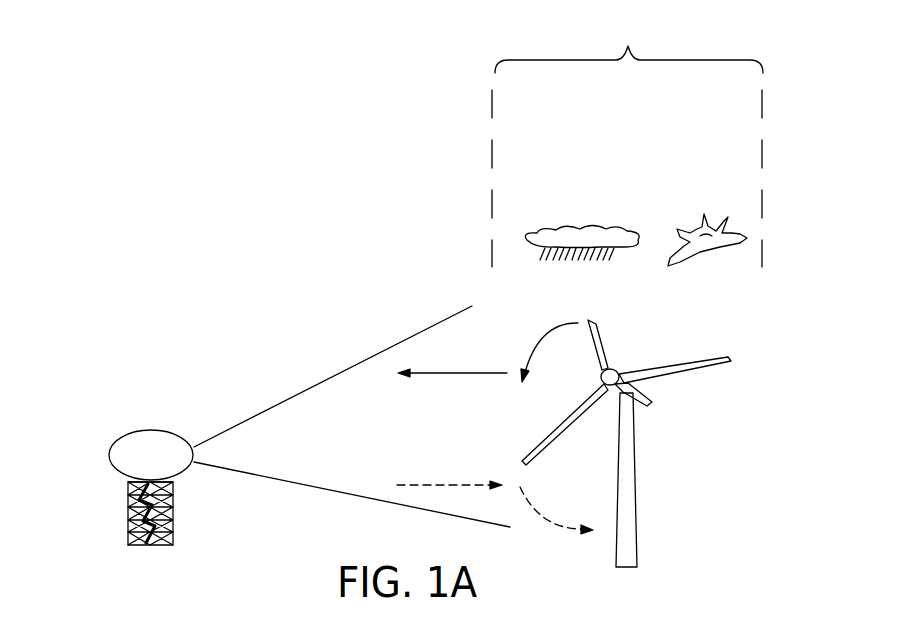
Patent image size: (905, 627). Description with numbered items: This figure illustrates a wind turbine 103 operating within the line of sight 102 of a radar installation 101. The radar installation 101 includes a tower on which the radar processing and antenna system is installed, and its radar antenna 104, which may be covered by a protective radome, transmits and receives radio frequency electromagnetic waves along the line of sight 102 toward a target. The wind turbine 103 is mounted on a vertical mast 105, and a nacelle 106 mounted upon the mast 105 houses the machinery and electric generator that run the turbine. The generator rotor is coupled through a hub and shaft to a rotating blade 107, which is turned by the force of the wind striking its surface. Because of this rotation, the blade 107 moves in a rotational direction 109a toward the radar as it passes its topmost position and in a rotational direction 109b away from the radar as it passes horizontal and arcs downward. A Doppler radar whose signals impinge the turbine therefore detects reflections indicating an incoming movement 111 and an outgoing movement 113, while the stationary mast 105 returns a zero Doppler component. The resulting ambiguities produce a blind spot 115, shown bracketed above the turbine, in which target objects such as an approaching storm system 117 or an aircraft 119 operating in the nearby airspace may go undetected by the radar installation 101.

The radar installation 101 is at (89, 485).
The line of sight 102 is at (296, 396).
The wind turbine 103 is at (662, 448).
The radar antenna 104 is at (152, 430).
The vertical mast 105 is at (638, 535).
The nacelle 106 is at (641, 412).
The rotating blade 107 is at (676, 364).
The rotational direction toward the radar 109a is at (541, 350).
The rotational direction away from the radar 109b is at (559, 510).
The incoming movement 111 is at (452, 361).
The outgoing movement 113 is at (449, 475).
The blind spot 115 is at (627, 143).
The moving storm system 117 is at (582, 226).
The aircraft 119 is at (707, 228).